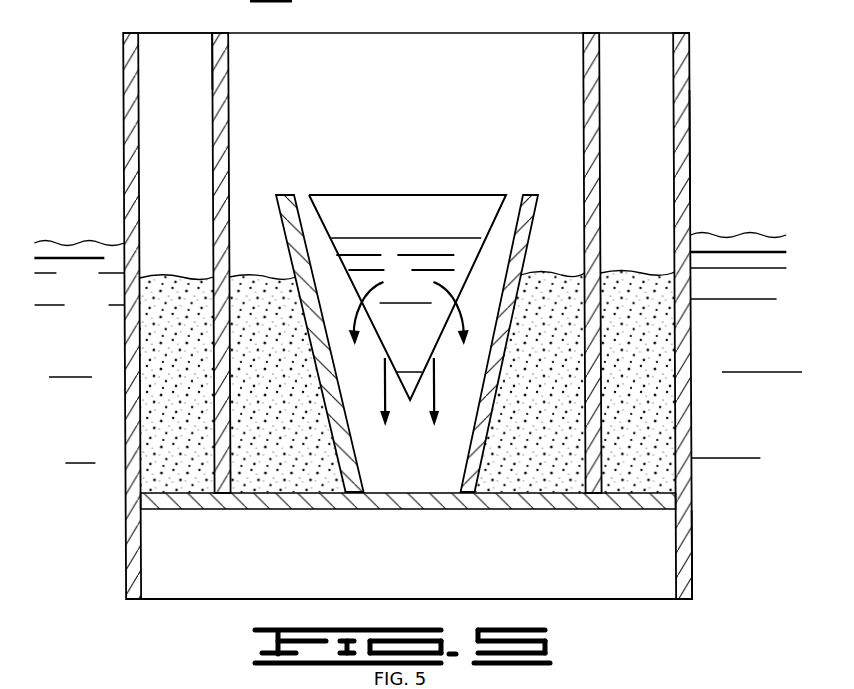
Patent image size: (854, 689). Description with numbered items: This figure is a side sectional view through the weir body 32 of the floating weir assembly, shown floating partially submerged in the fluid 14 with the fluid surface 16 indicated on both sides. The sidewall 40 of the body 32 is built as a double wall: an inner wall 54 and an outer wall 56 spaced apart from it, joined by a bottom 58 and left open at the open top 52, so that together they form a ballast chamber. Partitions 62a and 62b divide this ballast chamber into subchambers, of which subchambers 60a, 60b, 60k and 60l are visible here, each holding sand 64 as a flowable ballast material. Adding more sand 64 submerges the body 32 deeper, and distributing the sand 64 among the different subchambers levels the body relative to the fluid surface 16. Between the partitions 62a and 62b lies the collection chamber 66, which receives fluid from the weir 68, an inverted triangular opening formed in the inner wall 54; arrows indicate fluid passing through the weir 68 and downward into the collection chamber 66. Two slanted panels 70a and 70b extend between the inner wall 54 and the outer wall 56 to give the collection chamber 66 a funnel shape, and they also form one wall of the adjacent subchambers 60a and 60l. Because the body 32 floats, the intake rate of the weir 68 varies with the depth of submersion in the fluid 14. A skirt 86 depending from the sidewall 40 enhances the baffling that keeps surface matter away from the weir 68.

The fluid 14 is at (712, 262).
The fluid surface 16 is at (93, 245).
The weir body 32 is at (696, 61).
The sidewall 40 is at (690, 142).
The open top 52 is at (140, 63).
The inner wall 54 is at (229, 68).
The outer wall 56 is at (123, 92).
The bottom 58 is at (185, 508).
The ballast subchamber 60a is at (267, 450).
The ballast subchamber 60b is at (150, 92).
The ballast subchamber 60k is at (615, 103).
The ballast subchamber 60l is at (545, 445).
The partition 62a is at (229, 116).
The partition 62b is at (583, 105).
The sand 64 is at (157, 295).
The collection chamber 66 is at (392, 470).
The weir 68 is at (456, 200).
The slanted panel 70a is at (333, 412).
The slanted panel 70b is at (488, 387).
The skirt 86 is at (688, 566).